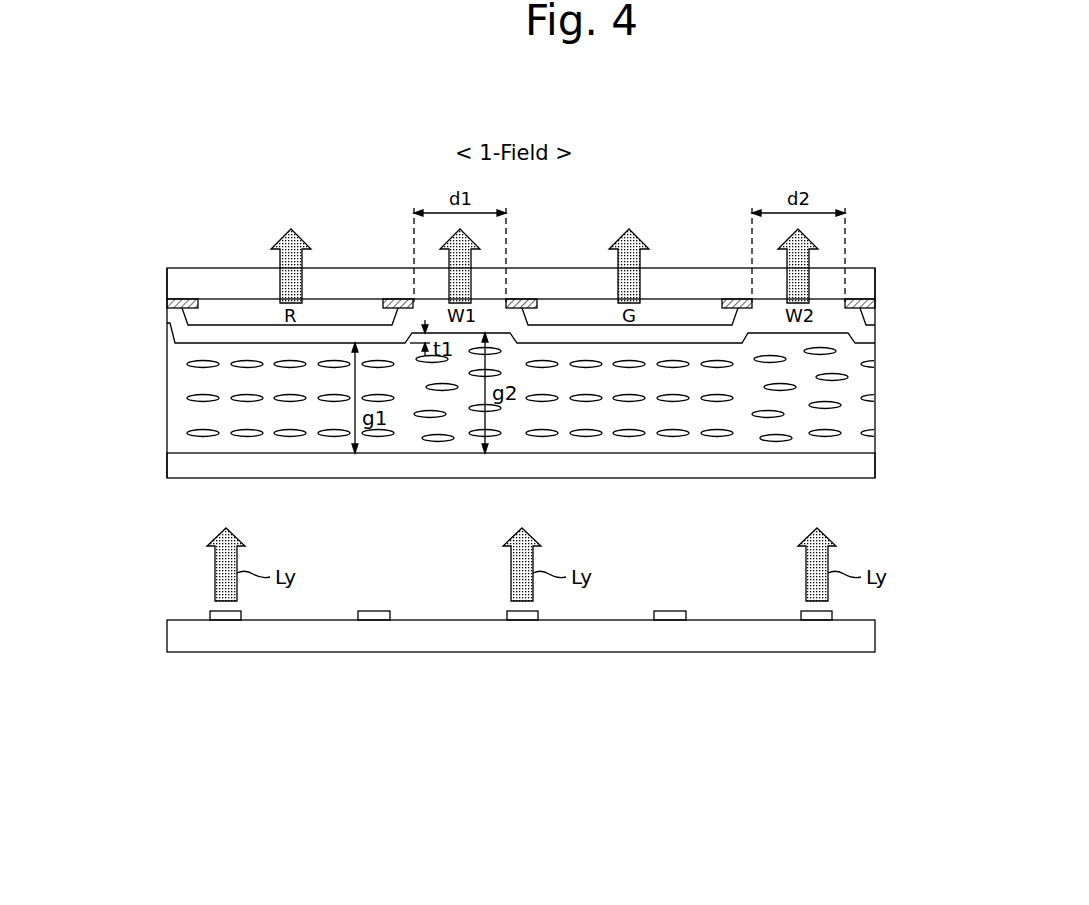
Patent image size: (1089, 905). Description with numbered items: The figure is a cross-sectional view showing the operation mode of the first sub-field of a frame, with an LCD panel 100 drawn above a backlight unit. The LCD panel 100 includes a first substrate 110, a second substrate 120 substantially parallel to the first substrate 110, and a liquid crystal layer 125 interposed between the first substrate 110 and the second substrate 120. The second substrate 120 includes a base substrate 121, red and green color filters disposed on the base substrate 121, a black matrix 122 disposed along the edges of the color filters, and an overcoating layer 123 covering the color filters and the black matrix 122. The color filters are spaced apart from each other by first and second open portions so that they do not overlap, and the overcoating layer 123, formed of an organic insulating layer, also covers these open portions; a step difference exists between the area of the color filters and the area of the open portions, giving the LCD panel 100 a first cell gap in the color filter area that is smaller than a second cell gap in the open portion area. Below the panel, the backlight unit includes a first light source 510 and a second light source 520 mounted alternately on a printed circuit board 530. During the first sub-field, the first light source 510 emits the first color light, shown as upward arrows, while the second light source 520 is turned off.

The LCD panel 100 is at (622, 374).
The first substrate 110 is at (870, 463).
The second substrate 120 is at (593, 308).
The base substrate 121 is at (870, 283).
The black matrix 122 is at (875, 307).
The overcoating layer 123 is at (875, 332).
The liquid crystal layer 125 is at (870, 415).
The first light source 510 is at (226, 617).
The second light source 520 is at (374, 617).
The printed circuit board 530 is at (868, 637).